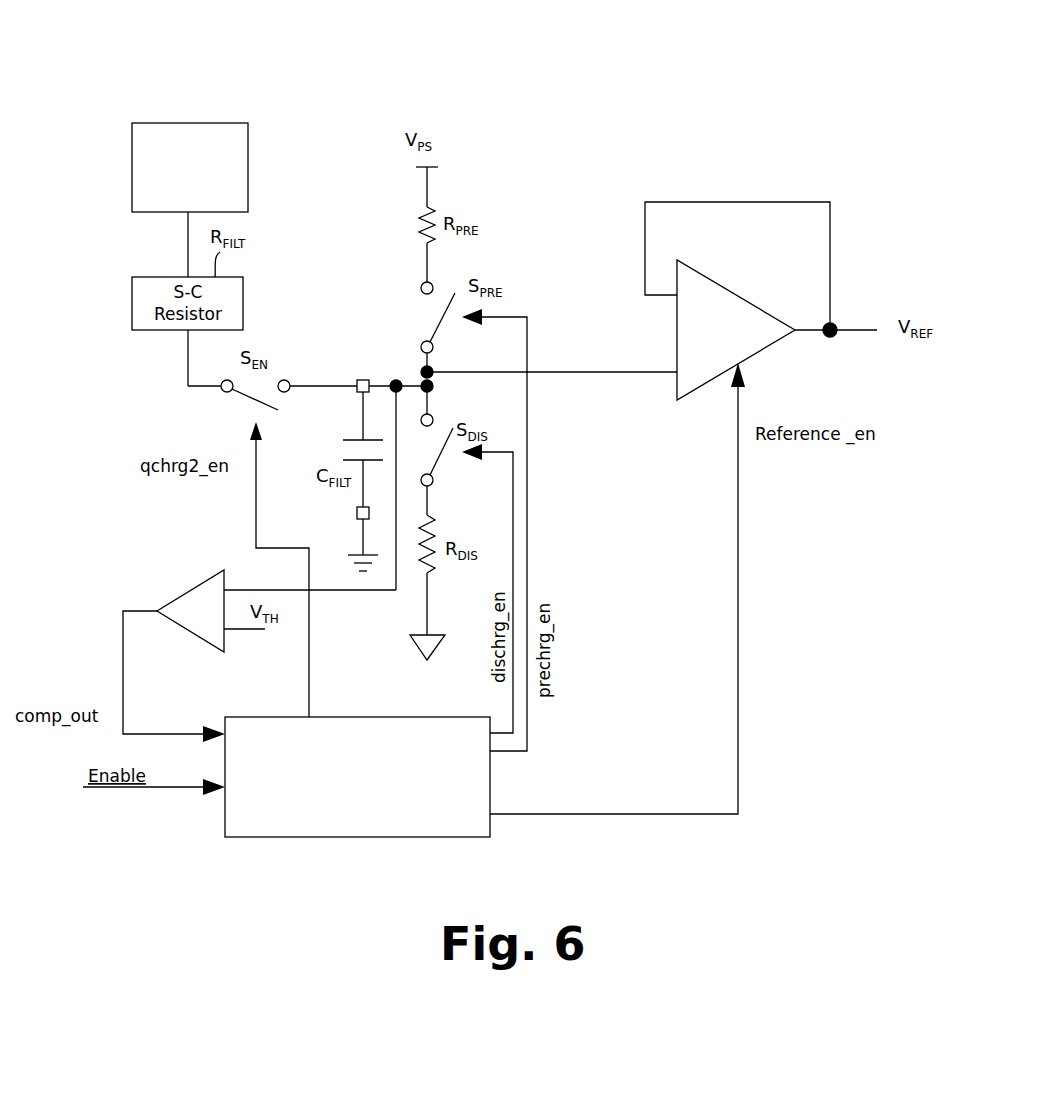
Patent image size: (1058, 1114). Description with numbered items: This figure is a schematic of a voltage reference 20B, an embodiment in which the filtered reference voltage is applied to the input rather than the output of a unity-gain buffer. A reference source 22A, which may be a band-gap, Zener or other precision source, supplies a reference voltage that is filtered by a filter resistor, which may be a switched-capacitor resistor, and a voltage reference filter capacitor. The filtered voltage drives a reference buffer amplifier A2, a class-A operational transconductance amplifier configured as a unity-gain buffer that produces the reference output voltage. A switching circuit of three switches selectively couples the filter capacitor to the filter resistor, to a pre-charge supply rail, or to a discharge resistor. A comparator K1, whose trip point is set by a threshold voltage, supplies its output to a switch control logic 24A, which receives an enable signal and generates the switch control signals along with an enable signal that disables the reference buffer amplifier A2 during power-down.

The voltage reference 20B is at (650, 99).
The reference source 22A is at (190, 167).
The switch control logic 24A is at (357, 777).
The reference buffer amplifier A2 is at (736, 330).
The comparator K1 is at (190, 611).